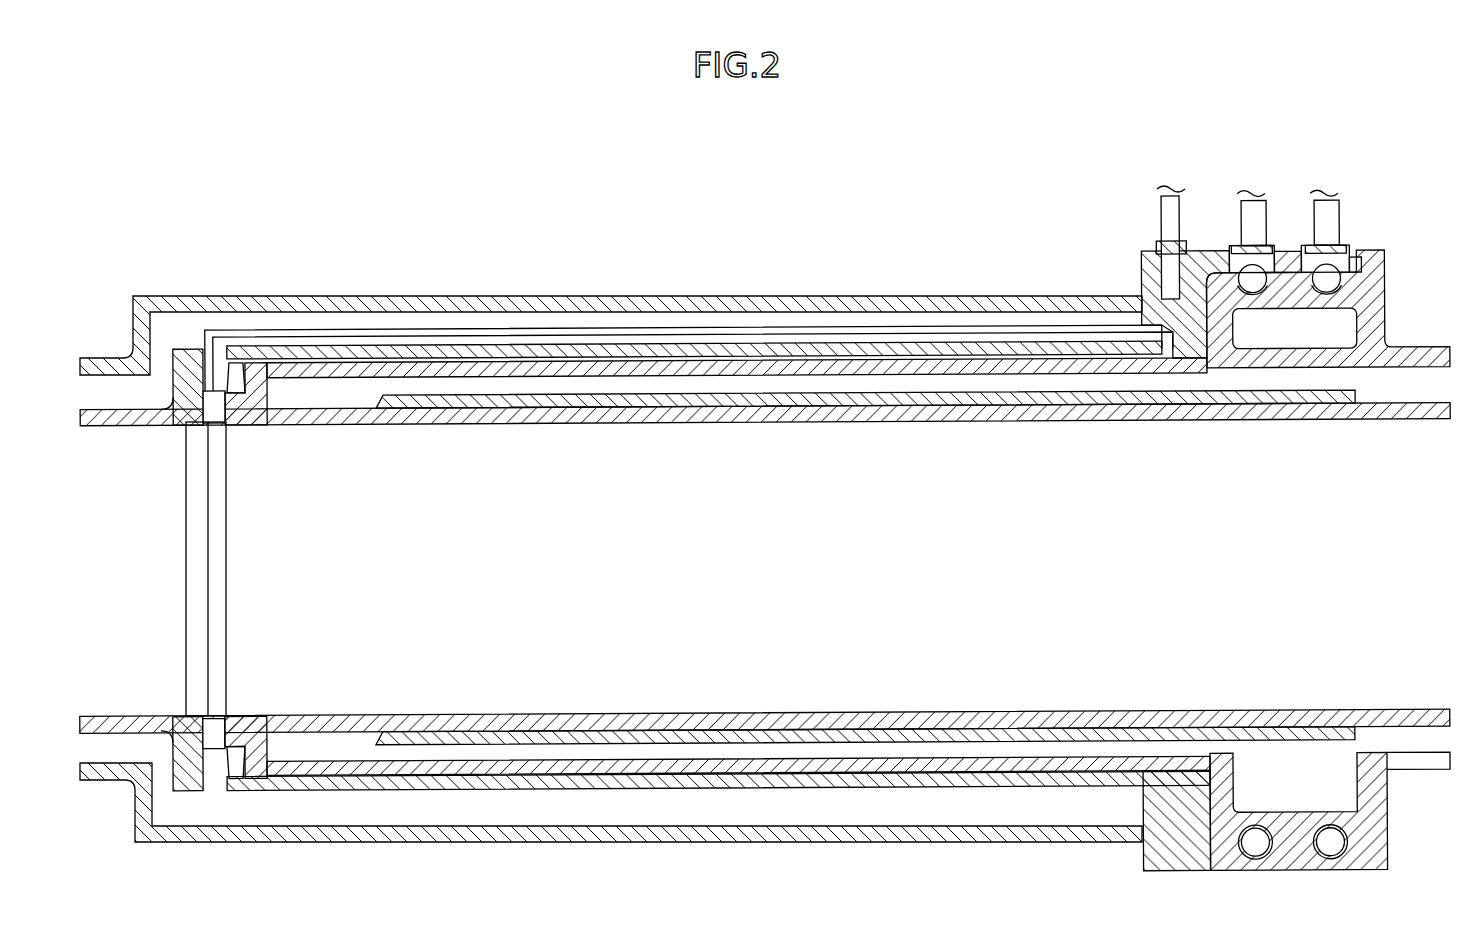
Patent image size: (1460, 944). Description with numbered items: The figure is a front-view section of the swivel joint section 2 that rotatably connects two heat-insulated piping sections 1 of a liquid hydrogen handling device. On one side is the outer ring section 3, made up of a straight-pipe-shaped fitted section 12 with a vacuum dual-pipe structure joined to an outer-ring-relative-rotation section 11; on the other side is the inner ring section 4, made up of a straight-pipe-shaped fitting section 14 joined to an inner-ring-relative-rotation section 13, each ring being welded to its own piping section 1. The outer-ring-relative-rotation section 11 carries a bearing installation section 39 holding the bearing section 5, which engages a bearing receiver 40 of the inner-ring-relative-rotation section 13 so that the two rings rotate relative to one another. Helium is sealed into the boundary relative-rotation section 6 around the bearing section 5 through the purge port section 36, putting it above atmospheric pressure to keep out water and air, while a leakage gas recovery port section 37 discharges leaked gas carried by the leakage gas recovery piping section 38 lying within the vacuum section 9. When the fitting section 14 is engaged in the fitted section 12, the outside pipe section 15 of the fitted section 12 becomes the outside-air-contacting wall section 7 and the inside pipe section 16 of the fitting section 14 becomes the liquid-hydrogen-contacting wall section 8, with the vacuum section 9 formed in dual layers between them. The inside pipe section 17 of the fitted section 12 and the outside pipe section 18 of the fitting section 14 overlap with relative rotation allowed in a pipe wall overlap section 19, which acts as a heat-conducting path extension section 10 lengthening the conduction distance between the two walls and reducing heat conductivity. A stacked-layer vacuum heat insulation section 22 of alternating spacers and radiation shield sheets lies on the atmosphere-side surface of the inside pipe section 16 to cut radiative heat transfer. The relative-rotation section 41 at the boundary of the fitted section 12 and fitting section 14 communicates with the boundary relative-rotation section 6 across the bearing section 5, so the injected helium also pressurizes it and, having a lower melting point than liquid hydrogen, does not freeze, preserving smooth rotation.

The piping section 1 is at (110, 780).
The swivel joint section 2 is at (1038, 185).
The outer ring section 3 is at (347, 285).
The inner ring section 4 is at (1382, 434).
The bearing section 5 is at (1253, 287).
The boundary relative-rotation section 6 is at (1290, 290).
The outside-air-contacting wall section 7 is at (611, 284).
The liquid-hydrogen-contacting wall section 8 is at (765, 458).
The vacuum section 9 is at (880, 385).
The heat-conducting path extension section 10 is at (737, 435).
The outer-ring-relative-rotation section 11 is at (1230, 250).
The fitted section 12 is at (611, 284).
The inner-ring-relative-rotation section 13 is at (1360, 297).
The fitting section 14 is at (428, 436).
The outside pipe section 15 is at (620, 296).
The inside pipe section 16 is at (578, 410).
The inside pipe section 17 is at (762, 346).
The outside pipe section 18 is at (365, 378).
The pipe wall overlap section 19 is at (798, 352).
The stacked-layer vacuum heat insulation section 22 is at (498, 409).
The purge port section 36 is at (1267, 242).
The leakage gas recovery port section 37 is at (1160, 248).
The leakage gas recovery piping section 38 is at (688, 299).
The bearing installation section 39 is at (1230, 255).
The bearing receiver 40 is at (1327, 290).
The relative-rotation section 41 is at (711, 358).